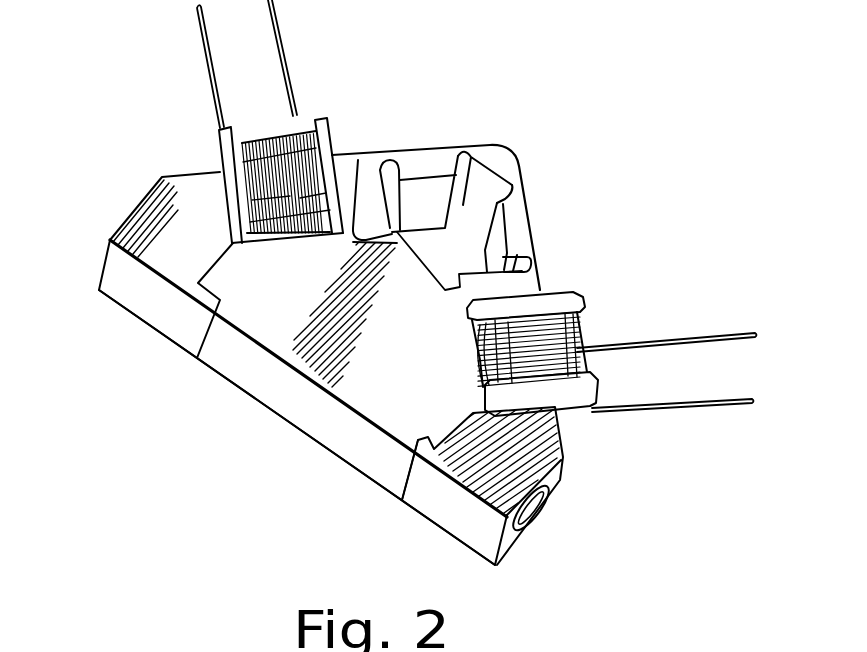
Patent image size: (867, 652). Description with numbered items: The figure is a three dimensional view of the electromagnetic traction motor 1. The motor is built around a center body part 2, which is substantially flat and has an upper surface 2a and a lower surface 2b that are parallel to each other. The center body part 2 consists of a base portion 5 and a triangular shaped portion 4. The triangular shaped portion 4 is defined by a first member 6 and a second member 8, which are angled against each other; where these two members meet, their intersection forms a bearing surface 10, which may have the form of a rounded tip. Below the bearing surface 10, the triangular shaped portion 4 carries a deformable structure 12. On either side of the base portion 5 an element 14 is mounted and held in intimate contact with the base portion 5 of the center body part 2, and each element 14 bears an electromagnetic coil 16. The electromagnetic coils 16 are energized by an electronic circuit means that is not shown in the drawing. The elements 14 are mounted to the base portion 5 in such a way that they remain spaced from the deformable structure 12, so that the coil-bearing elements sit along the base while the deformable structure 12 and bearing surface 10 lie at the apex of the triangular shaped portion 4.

The electromagnetic traction motor 1 is at (136, 386).
The center body part 2 is at (337, 273).
The upper surface 2a is at (420, 472).
The lower surface 2b is at (267, 406).
The triangular shaped portion 4 is at (515, 228).
The base portion 5 is at (348, 390).
The first member 6 is at (540, 273).
The second member 8 is at (445, 147).
The bearing surface 10 is at (517, 163).
The deformable structure 12 is at (527, 177).
The element 14 is at (172, 212).
The electromagnetic coil 16 is at (227, 147).